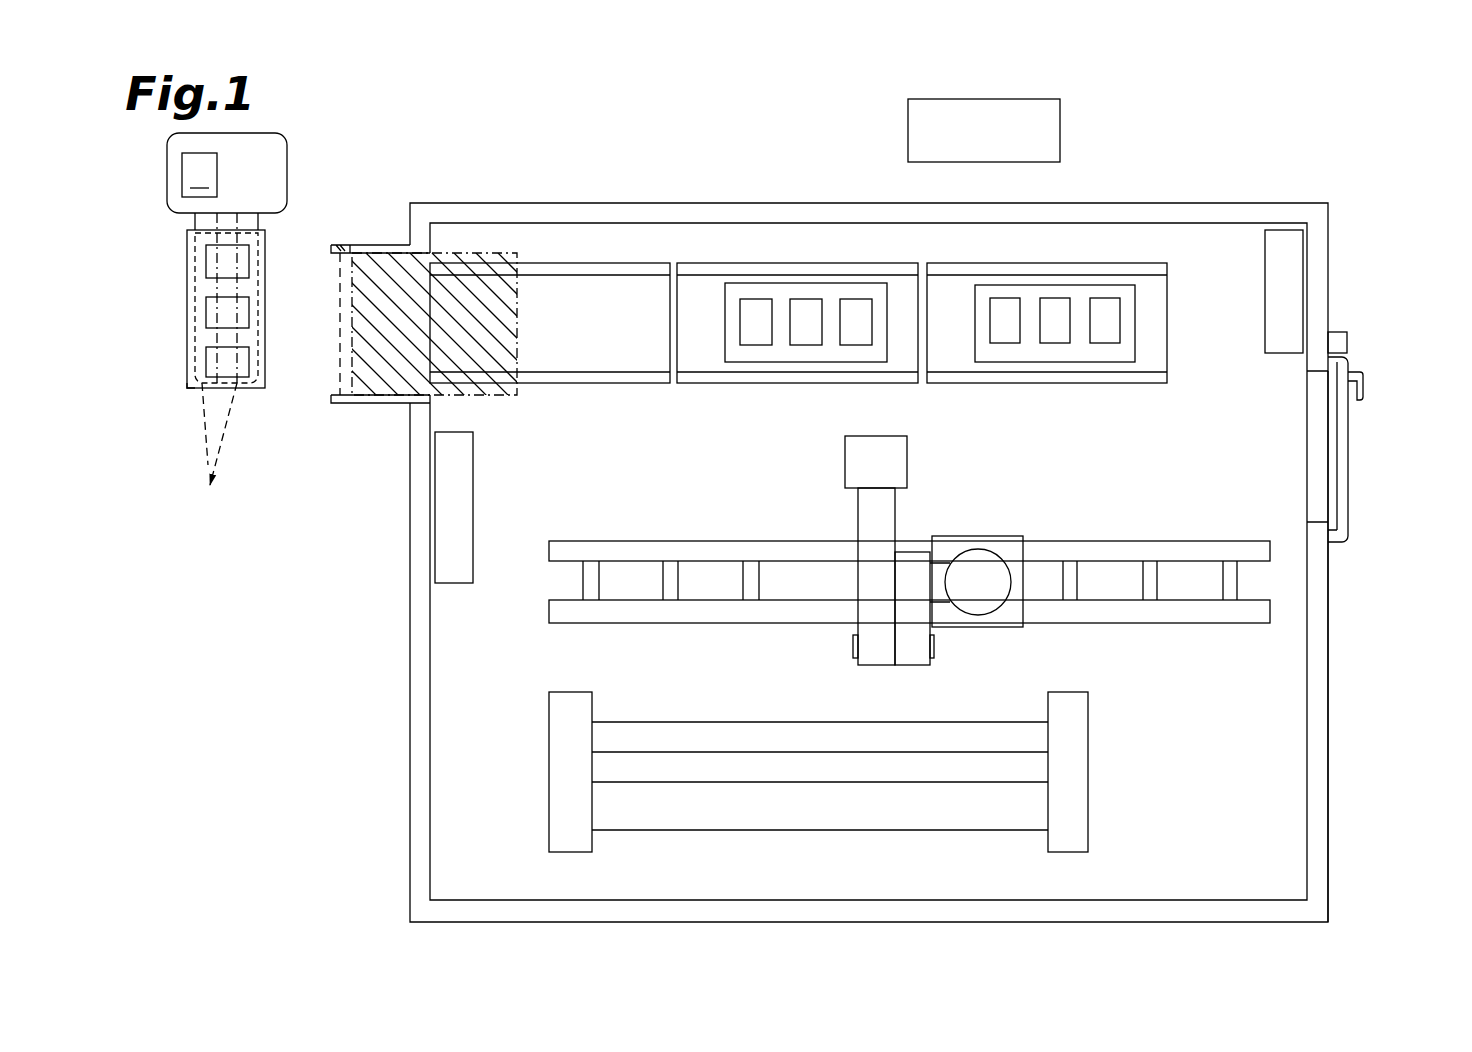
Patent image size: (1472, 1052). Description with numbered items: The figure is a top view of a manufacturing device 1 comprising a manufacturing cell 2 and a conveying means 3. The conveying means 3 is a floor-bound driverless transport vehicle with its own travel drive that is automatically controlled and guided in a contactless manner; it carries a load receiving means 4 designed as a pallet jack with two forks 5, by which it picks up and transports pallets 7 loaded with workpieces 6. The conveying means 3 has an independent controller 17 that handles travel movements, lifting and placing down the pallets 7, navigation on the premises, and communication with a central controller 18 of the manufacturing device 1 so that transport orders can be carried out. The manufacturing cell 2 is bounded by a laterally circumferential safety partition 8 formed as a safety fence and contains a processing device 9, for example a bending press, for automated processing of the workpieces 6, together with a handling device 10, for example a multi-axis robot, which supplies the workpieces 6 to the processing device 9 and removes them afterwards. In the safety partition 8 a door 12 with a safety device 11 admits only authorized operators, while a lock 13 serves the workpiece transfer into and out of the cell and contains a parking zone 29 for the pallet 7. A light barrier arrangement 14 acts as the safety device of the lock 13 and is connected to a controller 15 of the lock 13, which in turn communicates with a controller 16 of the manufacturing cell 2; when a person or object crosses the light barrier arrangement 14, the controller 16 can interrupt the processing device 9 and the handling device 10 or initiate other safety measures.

The manufacturing device 1 is at (1355, 103).
The manufacturing cell 2 is at (1337, 195).
The conveying means 3 is at (297, 133).
The load receiving means 4 is at (167, 290).
The forks 5 is at (214, 452).
The workpieces 6 is at (215, 358).
The pallets 7 is at (187, 383).
The safety partition 8 is at (1342, 785).
The processing device 9 is at (838, 852).
The handling device 10 is at (1027, 498).
The safety device 11 is at (1340, 343).
The door 12 is at (1340, 490).
The lock 13 is at (333, 438).
The light barrier arrangement 14 is at (323, 373).
The controller of the lock 15 is at (490, 517).
The controller of the manufacturing cell 16 is at (1250, 308).
The controller of the conveying means 17 is at (199, 175).
The central controller 18 is at (880, 120).
The parking zone 29 is at (352, 258).